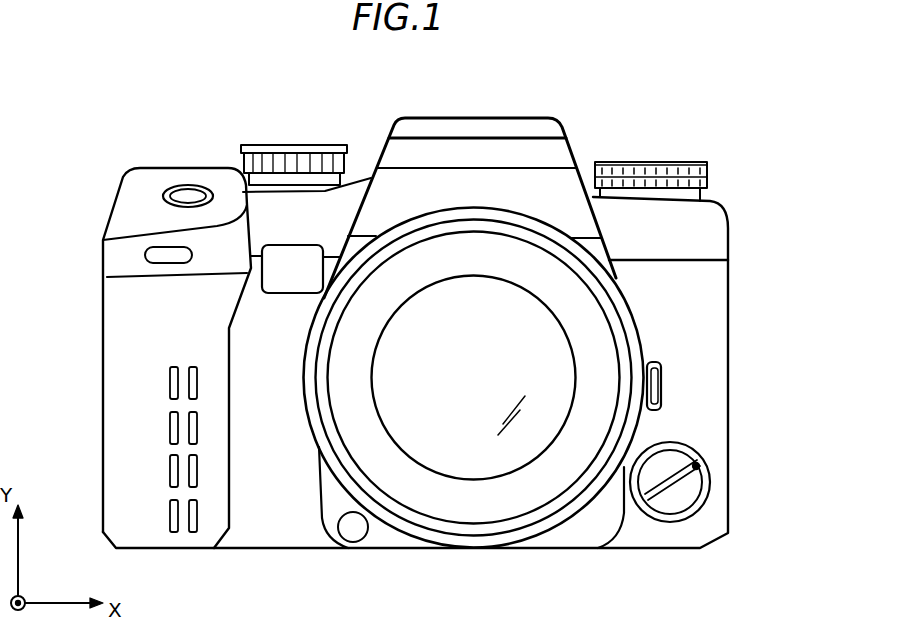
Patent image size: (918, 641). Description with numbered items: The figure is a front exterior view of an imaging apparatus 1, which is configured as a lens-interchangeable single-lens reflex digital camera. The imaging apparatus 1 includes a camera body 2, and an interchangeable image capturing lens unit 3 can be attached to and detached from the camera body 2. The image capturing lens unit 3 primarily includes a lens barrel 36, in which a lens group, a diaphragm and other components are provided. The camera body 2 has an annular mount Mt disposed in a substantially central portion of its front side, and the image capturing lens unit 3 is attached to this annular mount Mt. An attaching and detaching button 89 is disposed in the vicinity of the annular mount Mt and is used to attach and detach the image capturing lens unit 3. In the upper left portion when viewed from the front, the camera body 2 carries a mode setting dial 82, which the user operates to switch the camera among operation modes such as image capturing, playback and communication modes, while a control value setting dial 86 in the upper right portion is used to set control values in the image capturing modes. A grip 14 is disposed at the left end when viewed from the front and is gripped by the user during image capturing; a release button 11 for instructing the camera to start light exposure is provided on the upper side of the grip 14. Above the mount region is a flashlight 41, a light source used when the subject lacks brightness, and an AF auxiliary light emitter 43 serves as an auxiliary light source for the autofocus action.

The imaging apparatus 1 is at (50, 72).
The camera body 2 is at (728, 329).
The image capturing lens unit 3 is at (537, 498).
The release button 11 is at (189, 192).
The grip 14 is at (104, 393).
The lens barrel 36 is at (633, 302).
The flashlight 41 is at (573, 124).
The AF auxiliary light emitter 43 is at (277, 285).
The mode setting dial 82 is at (296, 145).
The control value setting dial 86 is at (651, 162).
The attaching and detaching button 89 is at (661, 388).
The annular mount Mt is at (301, 418).